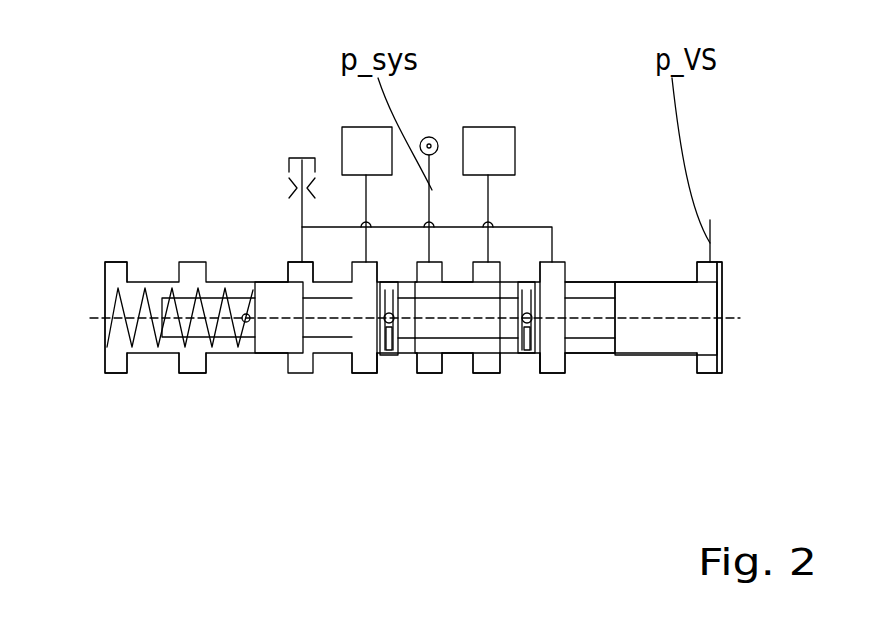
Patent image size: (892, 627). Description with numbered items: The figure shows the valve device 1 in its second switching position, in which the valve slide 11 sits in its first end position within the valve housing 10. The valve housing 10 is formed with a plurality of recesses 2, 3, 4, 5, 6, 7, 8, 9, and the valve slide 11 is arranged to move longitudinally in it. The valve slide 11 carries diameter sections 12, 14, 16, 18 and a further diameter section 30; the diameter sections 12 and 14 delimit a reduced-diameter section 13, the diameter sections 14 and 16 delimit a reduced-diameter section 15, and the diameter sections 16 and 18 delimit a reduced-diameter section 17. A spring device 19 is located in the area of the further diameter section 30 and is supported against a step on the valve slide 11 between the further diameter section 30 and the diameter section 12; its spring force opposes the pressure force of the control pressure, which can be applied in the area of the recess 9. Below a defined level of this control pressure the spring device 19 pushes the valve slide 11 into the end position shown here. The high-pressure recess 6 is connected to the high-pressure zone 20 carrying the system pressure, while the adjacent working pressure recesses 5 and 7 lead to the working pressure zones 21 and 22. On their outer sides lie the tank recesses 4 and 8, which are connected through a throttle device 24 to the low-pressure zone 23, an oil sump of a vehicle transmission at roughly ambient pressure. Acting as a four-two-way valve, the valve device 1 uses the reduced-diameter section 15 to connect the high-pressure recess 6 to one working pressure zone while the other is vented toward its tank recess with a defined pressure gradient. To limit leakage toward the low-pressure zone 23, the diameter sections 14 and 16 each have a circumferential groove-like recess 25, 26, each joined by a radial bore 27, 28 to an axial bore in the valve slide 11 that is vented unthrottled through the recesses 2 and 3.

The valve device 1 is at (148, 176).
The recess 2 is at (113, 365).
The recess 3 is at (191, 358).
The tank recess 4 is at (285, 266).
The working pressure recess 5 is at (362, 363).
The high-pressure recess 6 is at (427, 367).
The working pressure recess 7 is at (490, 365).
The tank recess 8 is at (552, 362).
The recess 9 is at (708, 363).
The valve housing 10 is at (668, 280).
The valve slide 11 is at (633, 280).
The diameter section 12 is at (272, 337).
The reduced-diameter section 13 is at (322, 327).
The diameter section 14 is at (407, 343).
The reduced-diameter section 15 is at (455, 343).
The diameter section 16 is at (510, 343).
The reduced-diameter section 17 is at (588, 330).
The diameter section 18 is at (663, 333).
The spring device 19 is at (107, 323).
The high-pressure zone 20 is at (430, 137).
The working pressure zone 21 is at (355, 132).
The working pressure zone 22 is at (478, 130).
The low-pressure zone 23 is at (301, 160).
The throttle device 24 is at (291, 188).
The groove-like recess 25 is at (395, 282).
The groove-like recess 26 is at (523, 283).
The radial bore 27 is at (392, 355).
The radial bore 28 is at (540, 298).
The further diameter section 30 is at (174, 328).